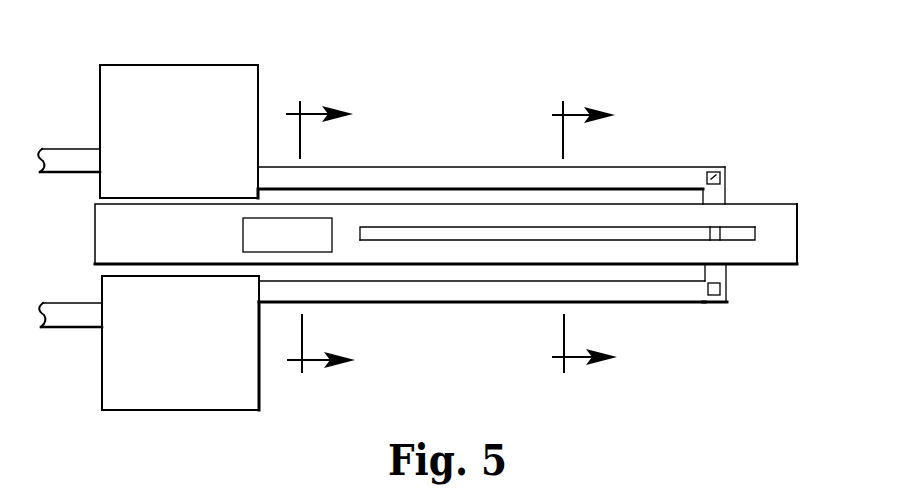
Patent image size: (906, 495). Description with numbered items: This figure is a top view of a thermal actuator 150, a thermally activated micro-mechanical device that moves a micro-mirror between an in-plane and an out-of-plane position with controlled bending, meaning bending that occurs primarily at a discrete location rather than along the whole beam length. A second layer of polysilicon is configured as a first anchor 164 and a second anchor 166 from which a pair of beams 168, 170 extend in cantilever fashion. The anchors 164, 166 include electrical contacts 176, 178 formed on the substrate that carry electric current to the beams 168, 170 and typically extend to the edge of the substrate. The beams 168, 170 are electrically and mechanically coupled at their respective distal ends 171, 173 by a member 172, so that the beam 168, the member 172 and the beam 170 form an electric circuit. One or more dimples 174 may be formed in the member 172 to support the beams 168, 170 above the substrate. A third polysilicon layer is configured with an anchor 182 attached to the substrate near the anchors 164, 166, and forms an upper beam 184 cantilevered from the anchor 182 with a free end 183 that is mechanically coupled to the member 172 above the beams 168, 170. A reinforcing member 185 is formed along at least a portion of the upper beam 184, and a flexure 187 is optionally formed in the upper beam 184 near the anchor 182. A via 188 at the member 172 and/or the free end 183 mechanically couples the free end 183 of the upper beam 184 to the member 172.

The thermal actuator 150 is at (686, 93).
The first anchor 164 is at (204, 145).
The second anchor 166 is at (206, 356).
The beam 168 is at (492, 176).
The beam 170 is at (441, 294).
The distal end 171 is at (697, 172).
The member 172 is at (718, 273).
The distal end 173 is at (702, 292).
The dimple 174 is at (725, 168).
The electrical contact 176 is at (65, 157).
The electrical contact 178 is at (67, 312).
The anchor 182 is at (102, 225).
The free end 183 is at (785, 243).
The upper beam 184 is at (405, 218).
The reinforcing member 185 is at (512, 233).
The flexure 187 is at (279, 243).
The via 188 is at (708, 232).